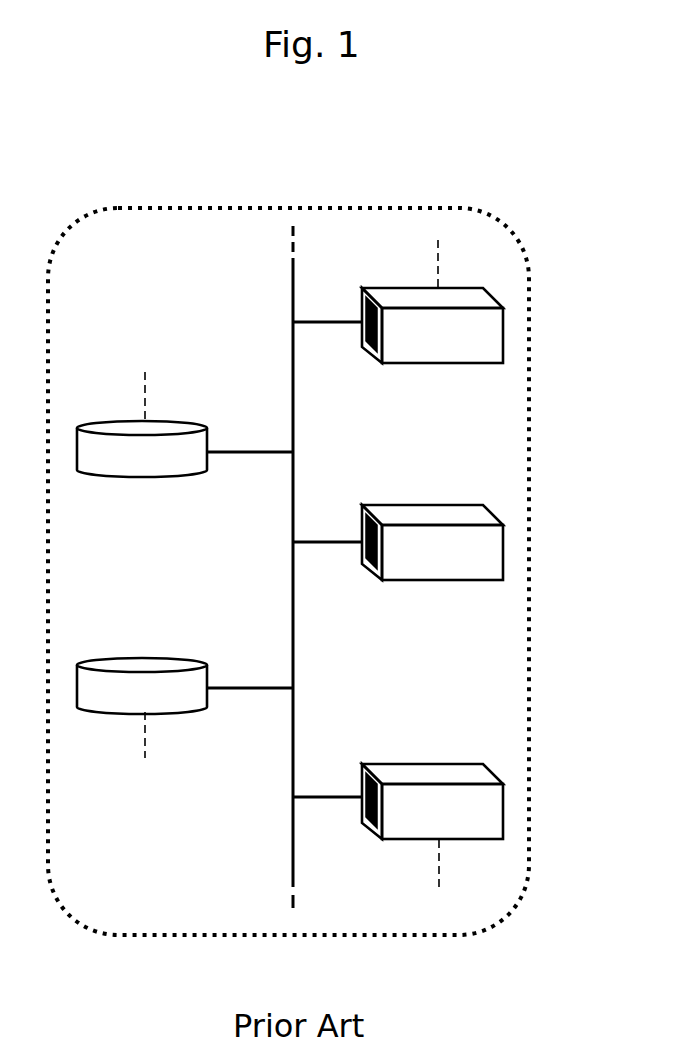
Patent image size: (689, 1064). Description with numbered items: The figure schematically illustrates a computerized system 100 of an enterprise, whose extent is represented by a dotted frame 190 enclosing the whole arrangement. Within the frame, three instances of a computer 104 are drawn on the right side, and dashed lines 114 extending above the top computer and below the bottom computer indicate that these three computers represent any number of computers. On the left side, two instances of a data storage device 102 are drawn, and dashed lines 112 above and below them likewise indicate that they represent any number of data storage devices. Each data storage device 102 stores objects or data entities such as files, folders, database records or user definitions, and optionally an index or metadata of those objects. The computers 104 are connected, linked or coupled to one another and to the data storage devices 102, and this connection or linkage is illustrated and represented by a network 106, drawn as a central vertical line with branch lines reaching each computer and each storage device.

The computerized system 100 is at (306, 186).
The dotted frame 190 is at (500, 222).
The data storage device 102 is at (173, 478).
The computer 104 is at (467, 363).
The network 106 is at (230, 452).
The dashed lines 112 is at (146, 400).
The dashed lines 114 is at (437, 275).